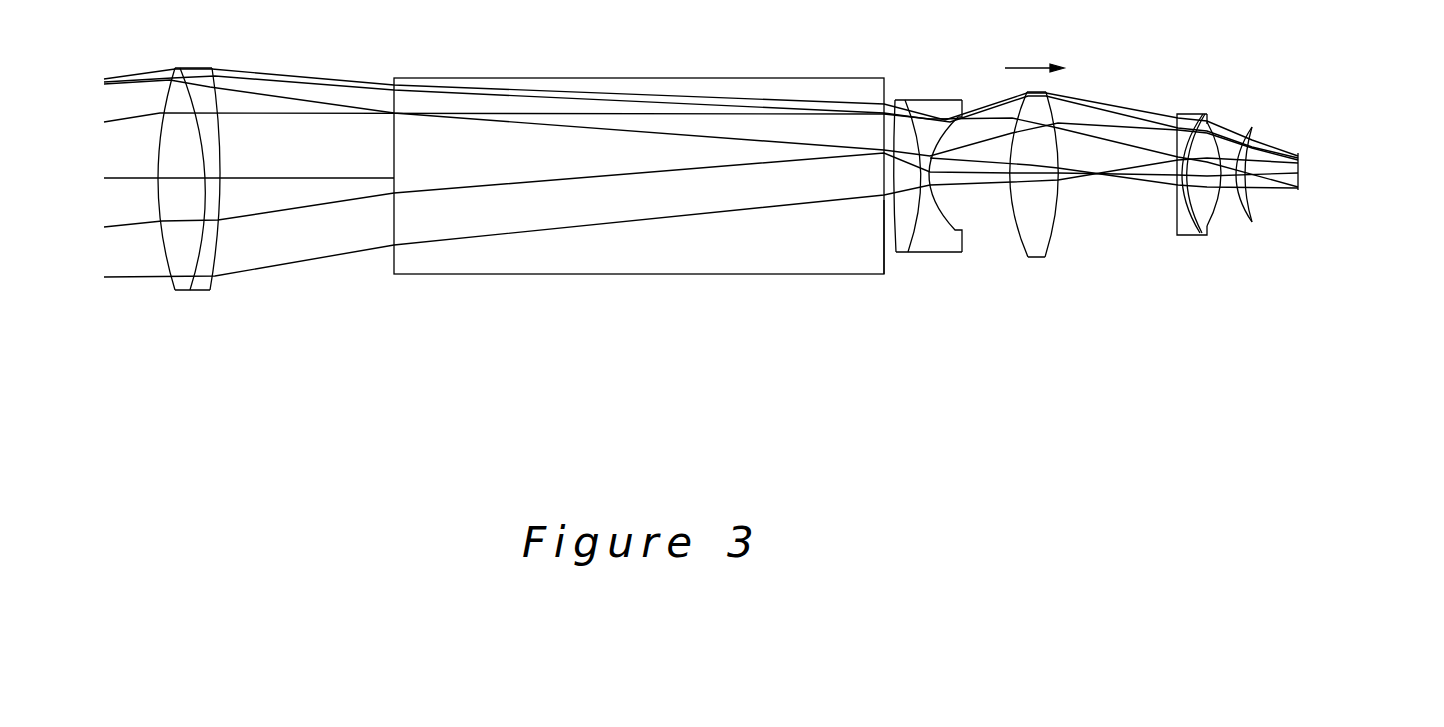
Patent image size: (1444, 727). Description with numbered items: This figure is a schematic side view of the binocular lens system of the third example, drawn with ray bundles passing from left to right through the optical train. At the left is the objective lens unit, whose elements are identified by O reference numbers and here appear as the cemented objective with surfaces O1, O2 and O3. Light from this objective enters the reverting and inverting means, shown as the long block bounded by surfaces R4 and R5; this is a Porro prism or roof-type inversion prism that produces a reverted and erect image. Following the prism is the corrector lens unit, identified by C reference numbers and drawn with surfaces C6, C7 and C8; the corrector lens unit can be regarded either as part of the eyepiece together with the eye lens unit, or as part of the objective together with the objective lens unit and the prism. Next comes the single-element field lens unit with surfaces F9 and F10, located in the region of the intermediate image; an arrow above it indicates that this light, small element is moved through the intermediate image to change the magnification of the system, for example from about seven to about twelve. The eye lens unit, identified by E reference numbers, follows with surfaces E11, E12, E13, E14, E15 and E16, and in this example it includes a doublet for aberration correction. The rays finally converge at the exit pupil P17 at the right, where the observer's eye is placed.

The objective lens unit element O1 is at (163, 250).
The objective lens unit element O2 is at (190, 272).
The objective lens unit element O3 is at (218, 275).
The reverting and inverting means R4 is at (394, 270).
The reverting and inverting means R5 is at (884, 274).
The corrector lens unit element C6 is at (898, 252).
The corrector lens unit element C7 is at (910, 244).
The corrector lens unit element C8 is at (953, 227).
The field lens unit element F9 is at (1028, 257).
The field lens unit element F10 is at (1053, 250).
The eye lens unit element E11 is at (1177, 215).
The eye lens unit element E12 is at (1194, 222).
The eye lens unit element E13 is at (1213, 220).
The eye lens unit element E14 is at (1222, 213).
The eye lens unit element E15 is at (1238, 207).
The eye lens unit element E16 is at (1252, 201).
The exit pupil P17 is at (1298, 153).